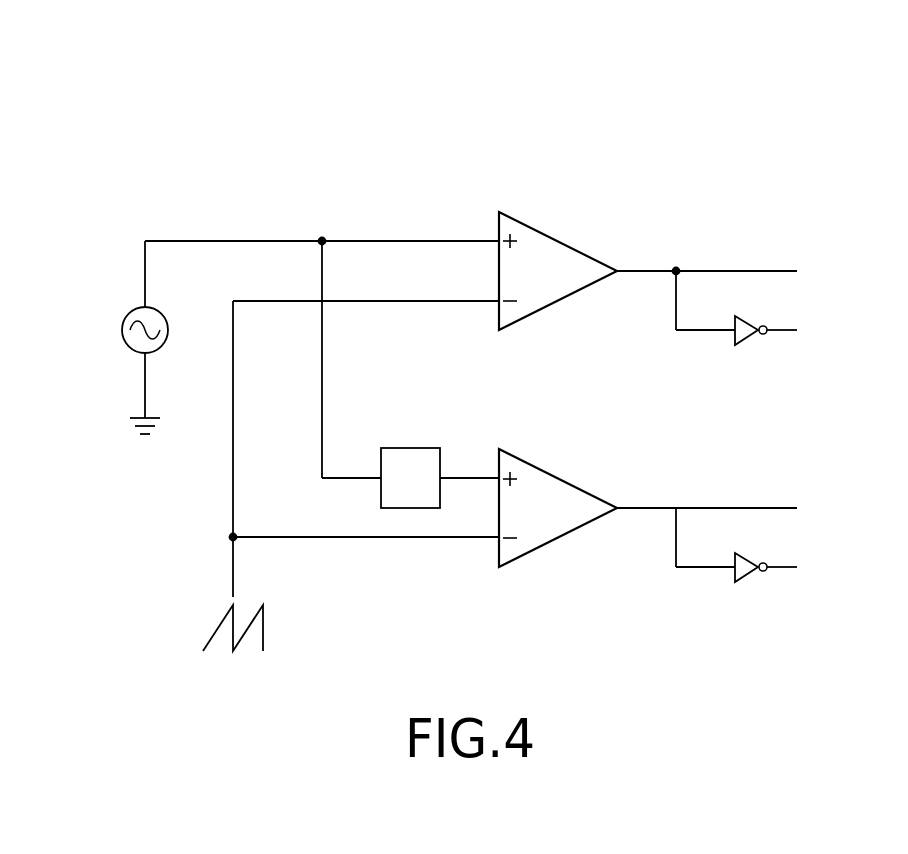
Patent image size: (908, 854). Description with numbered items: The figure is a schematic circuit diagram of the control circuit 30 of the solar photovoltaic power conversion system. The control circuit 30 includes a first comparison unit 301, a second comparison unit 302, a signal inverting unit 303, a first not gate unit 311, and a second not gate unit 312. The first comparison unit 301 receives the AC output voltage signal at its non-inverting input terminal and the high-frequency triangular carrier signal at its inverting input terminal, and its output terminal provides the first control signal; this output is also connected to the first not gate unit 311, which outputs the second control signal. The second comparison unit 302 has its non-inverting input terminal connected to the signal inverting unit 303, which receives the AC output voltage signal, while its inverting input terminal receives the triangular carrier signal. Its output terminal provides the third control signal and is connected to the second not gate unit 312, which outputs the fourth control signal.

The control circuit 30 is at (483, 144).
The first comparison unit 301 is at (557, 247).
The second comparison unit 302 is at (557, 484).
The signal inverting unit 303 is at (410, 455).
The first not gate unit 311 is at (748, 337).
The second not gate unit 312 is at (748, 574).